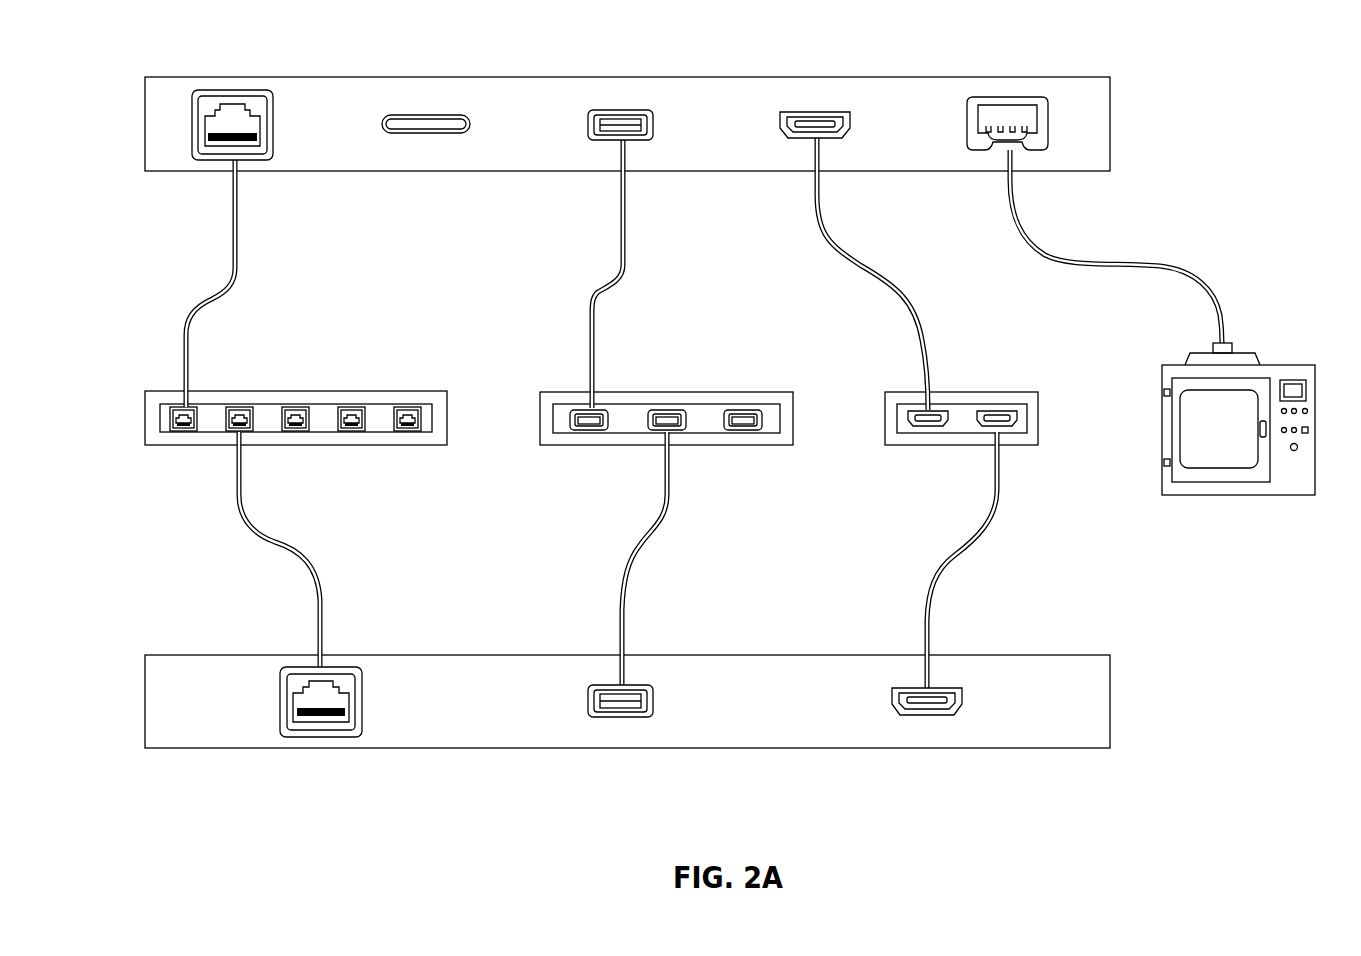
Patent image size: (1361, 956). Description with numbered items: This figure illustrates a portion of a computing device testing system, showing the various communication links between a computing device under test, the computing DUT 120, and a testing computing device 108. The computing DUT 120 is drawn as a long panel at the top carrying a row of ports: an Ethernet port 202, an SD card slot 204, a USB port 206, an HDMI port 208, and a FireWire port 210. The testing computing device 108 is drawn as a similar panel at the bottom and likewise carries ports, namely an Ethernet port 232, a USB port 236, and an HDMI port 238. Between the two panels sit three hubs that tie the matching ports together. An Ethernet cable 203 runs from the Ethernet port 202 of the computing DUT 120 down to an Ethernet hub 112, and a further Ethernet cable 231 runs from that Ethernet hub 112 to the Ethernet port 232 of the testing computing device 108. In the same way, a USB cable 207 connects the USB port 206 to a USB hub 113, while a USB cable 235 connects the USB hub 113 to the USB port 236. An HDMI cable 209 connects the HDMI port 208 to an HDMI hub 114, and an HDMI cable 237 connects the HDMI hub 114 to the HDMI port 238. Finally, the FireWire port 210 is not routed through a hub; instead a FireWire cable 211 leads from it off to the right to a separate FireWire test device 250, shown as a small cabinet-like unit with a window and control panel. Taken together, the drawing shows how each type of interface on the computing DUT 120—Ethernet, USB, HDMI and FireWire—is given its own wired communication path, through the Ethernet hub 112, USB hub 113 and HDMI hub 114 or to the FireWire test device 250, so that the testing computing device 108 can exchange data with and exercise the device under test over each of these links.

The computing DUT 120 is at (1088, 88).
The testing computing device 108 is at (1095, 695).
The Ethernet hub 112 is at (295, 392).
The USB hub 113 is at (665, 392).
The HDMI hub 114 is at (962, 392).
The Ethernet port 202 is at (232, 103).
The Ethernet cable 203 is at (228, 232).
The SD card slot 204 is at (425, 118).
The USB port 206 is at (617, 122).
The USB cable 207 is at (617, 235).
The HDMI port 208 is at (820, 122).
The HDMI cable 209 is at (815, 226).
The FireWire port 210 is at (1005, 115).
The FireWire cable 211 is at (1018, 222).
The Ethernet cable 231 is at (238, 503).
The Ethernet port 232 is at (335, 718).
The USB cable 235 is at (660, 500).
The USB port 236 is at (621, 712).
The HDMI cable 237 is at (987, 500).
The HDMI port 238 is at (927, 712).
The FireWire test device 250 is at (1285, 365).